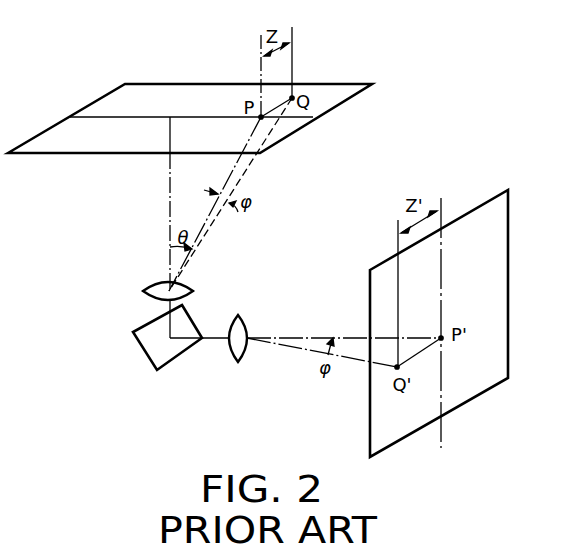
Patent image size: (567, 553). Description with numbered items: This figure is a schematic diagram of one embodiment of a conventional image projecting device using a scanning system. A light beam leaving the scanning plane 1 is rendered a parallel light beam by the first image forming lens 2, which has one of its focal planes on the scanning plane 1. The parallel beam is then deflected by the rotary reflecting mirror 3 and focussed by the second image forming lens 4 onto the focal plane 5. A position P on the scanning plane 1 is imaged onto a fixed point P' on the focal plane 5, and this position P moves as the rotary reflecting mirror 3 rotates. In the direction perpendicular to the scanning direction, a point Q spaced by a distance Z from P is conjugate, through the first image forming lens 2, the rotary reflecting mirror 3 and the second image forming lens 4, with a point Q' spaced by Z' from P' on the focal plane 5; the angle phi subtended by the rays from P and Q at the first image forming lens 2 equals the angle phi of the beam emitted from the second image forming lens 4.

The scanning plane 1 is at (350, 85).
The first image forming lens 2 is at (186, 286).
The rotary reflecting mirror 3 is at (172, 357).
The second image forming lens 4 is at (240, 353).
The focal plane 5 is at (505, 263).